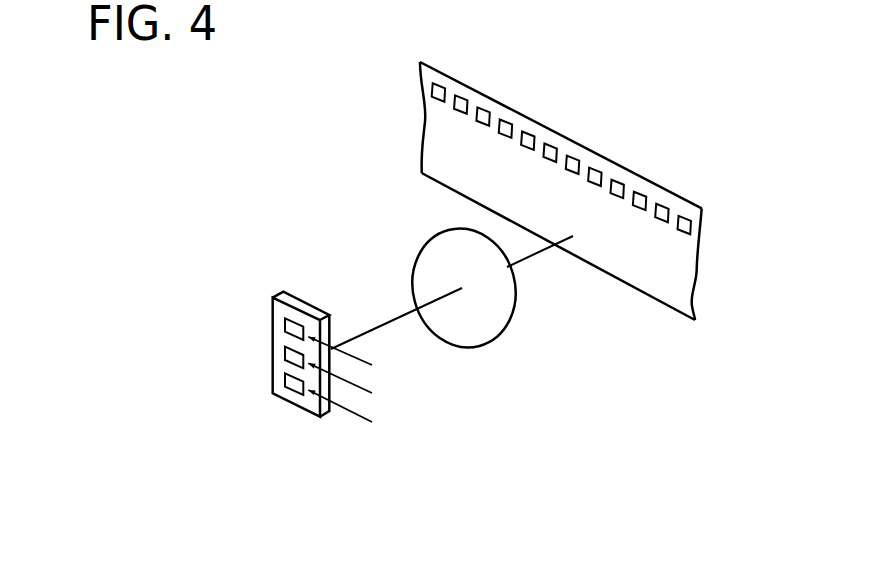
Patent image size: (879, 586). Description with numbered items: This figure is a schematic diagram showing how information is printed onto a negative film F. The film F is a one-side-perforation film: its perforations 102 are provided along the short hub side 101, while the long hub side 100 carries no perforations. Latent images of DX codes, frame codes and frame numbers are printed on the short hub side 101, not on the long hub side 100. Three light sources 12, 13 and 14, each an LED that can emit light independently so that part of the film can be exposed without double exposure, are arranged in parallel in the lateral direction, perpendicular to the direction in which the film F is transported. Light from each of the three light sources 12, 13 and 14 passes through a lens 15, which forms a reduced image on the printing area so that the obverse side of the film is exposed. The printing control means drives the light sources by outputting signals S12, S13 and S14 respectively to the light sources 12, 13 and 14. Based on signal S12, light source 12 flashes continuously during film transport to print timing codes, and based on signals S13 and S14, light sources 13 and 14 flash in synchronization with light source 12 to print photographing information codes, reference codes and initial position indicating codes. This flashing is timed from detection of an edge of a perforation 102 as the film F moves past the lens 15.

The negative film F is at (576, 216).
The long hub side 100 is at (613, 277).
The short hub side 101 is at (597, 148).
The perforations 102 is at (483, 110).
The lens 15 is at (497, 324).
The light source 12 is at (285, 384).
The light source 13 is at (285, 356).
The light source 14 is at (285, 323).
The signal S12 is at (366, 415).
The signal S13 is at (369, 386).
The signal S14 is at (366, 358).